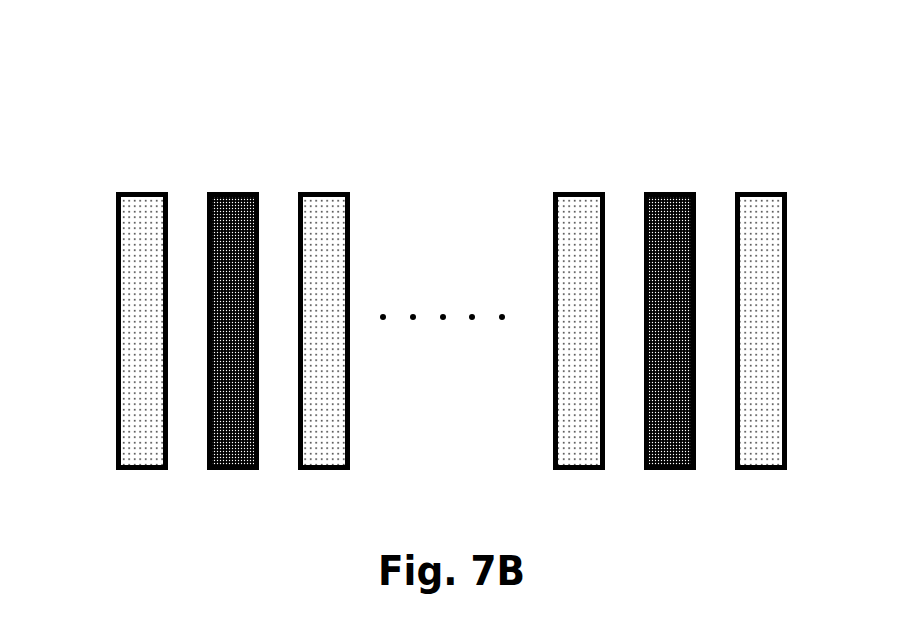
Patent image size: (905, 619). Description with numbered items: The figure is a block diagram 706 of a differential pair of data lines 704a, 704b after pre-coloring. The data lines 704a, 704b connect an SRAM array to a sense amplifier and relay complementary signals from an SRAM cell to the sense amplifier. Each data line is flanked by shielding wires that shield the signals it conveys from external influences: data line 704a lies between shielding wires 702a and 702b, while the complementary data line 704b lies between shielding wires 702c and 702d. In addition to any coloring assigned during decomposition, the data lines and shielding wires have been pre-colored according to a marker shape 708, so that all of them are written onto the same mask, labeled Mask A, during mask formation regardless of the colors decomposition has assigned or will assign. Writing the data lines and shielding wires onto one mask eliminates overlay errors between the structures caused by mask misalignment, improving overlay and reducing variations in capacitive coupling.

The block diagram 706 is at (79, 65).
The marker shape 708 is at (109, 185).
The shielding wire 702a is at (144, 478).
The data line 704a is at (235, 478).
The shielding wire 702b is at (325, 478).
The shielding wire 702c is at (582, 478).
The data line 704b is at (672, 478).
The shielding wire 702d is at (762, 478).